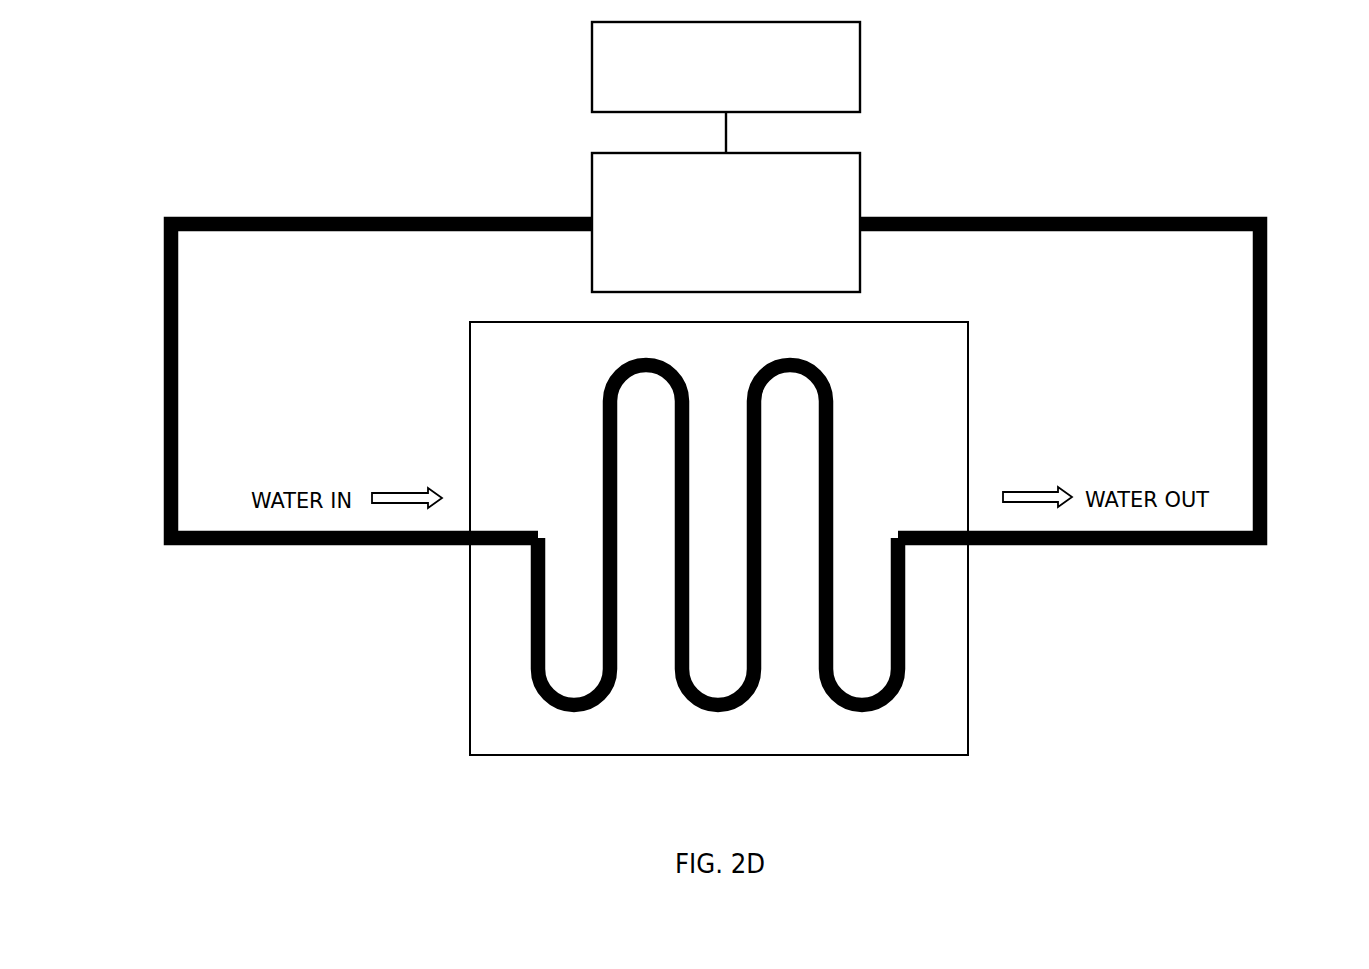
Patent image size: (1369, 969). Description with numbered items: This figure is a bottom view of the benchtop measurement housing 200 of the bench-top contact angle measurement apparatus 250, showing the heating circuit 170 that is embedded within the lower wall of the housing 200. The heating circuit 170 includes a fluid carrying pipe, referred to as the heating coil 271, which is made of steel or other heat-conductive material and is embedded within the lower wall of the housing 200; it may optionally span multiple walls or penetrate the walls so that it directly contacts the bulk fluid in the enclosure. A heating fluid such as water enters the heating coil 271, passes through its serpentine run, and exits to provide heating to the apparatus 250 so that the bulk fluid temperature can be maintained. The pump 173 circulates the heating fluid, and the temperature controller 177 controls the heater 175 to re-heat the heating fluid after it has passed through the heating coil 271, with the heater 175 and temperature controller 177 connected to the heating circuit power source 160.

The heating circuit power source 160 is at (726, 67).
The heating circuit 170 is at (279, 183).
The pump 173 is at (726, 222).
The heater 175 is at (726, 222).
The temperature controller 177 is at (726, 222).
The housing 200 is at (941, 757).
The bench-top contact angle measurement apparatus 250 is at (902, 592).
The heating coil 271 is at (906, 613).